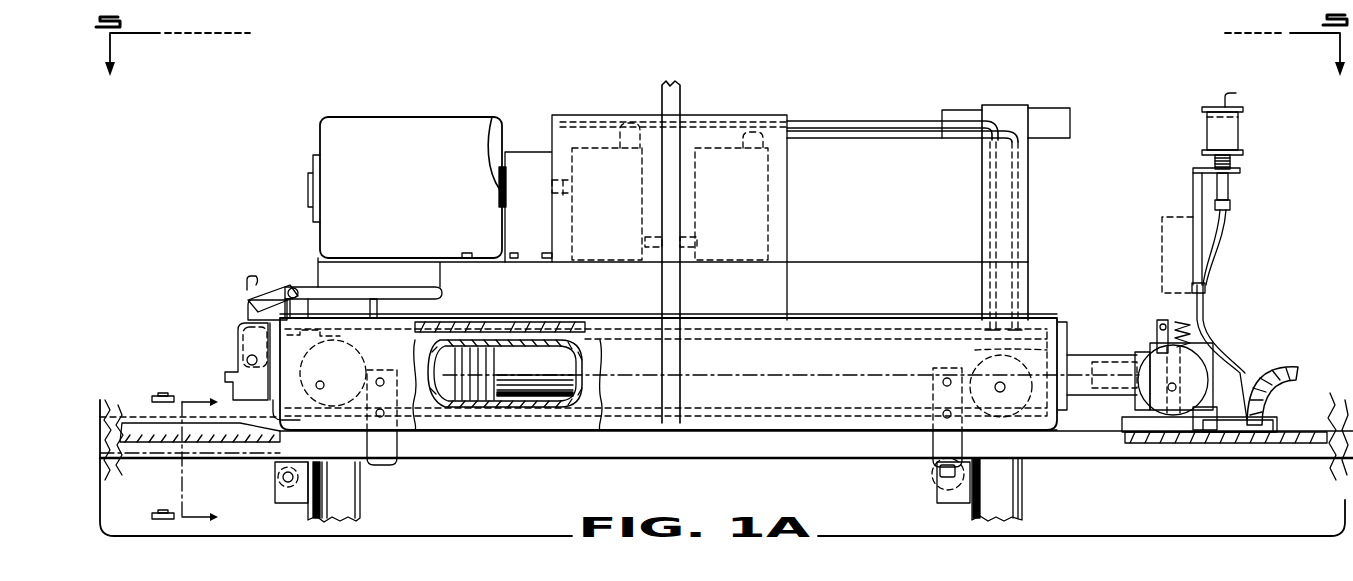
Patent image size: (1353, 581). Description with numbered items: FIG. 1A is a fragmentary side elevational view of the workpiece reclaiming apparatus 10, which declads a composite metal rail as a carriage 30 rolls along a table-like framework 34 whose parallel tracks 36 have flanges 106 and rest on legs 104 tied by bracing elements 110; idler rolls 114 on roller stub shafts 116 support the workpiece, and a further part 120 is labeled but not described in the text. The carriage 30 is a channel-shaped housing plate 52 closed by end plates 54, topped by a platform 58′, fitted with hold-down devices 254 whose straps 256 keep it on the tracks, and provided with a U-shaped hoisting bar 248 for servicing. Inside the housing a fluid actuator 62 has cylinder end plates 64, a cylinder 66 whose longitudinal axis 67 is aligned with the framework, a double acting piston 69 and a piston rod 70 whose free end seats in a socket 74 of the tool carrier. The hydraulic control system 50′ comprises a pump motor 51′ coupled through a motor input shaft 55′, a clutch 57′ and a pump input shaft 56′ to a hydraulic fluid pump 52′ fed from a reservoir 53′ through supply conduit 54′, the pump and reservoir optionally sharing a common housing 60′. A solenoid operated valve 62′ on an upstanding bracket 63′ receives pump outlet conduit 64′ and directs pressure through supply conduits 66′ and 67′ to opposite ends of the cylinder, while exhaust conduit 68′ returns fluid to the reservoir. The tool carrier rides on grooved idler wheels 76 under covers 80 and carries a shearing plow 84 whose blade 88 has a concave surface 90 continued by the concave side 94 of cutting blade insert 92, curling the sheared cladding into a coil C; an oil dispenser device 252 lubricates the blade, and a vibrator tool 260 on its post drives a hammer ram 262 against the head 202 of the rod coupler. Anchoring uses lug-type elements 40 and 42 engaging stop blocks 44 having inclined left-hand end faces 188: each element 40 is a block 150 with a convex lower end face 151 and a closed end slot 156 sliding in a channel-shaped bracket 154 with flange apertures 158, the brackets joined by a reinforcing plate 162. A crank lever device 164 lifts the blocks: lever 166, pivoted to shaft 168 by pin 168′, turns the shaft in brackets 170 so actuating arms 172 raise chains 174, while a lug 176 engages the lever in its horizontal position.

The workpiece reclaiming apparatus 10 is at (252, 92).
The hydraulic control system 50′ is at (386, 104).
The pump motor 51′ is at (432, 122).
The motor input shaft 55′ is at (491, 117).
The clutch 57′ is at (524, 162).
The pump input shaft 56′ is at (563, 180).
The hydraulic fluid pump 52′ is at (597, 157).
The reservoir 53′ is at (720, 157).
The common housing 60′ is at (738, 115).
The pump fluid outlet conduit 64′ is at (812, 121).
The exhaust conduit 68′ is at (853, 131).
The solenoid operated valve 62′ is at (1040, 115).
The portable oil reservoir dispenser device 252 is at (1196, 124).
The U-shaped hoisting bar 248 is at (662, 180).
The supply conduit 54′ is at (645, 240).
The upstanding bracket 63′ is at (980, 195).
The vibrator tool 260 is at (1155, 231).
The supply conduit 66′ is at (987, 247).
The supply conduit 67′ is at (1040, 245).
The reciprocal hammer ram 262 is at (1180, 298).
The shaft 168 is at (288, 288).
The crank lever device 164 is at (367, 279).
The actuating arms 172 is at (258, 280).
The pin 168′ is at (296, 287).
The brackets 170 is at (316, 300).
The lever 166 is at (382, 293).
The chains 174 is at (250, 303).
The lug 176 is at (378, 307).
The closed end slot 156 is at (240, 335).
The retractable anchoring lug-type element 40 is at (237, 340).
The reinforcing plate 162 is at (240, 362).
The flange apertures 158 is at (258, 360).
The channel-shaped brackets 154 is at (230, 392).
The lower bottom end face 151 is at (251, 392).
The block 150 is at (284, 414).
The left-hand end face 188 is at (140, 400).
The end plates 64 is at (667, 373).
The end plates 54 is at (1063, 322).
The cylinder 66 is at (540, 340).
The fluid actuator 62 is at (580, 402).
The double acting piston 69 is at (462, 367).
The piston rod 70 is at (528, 385).
The channel-shaped plate 52 is at (663, 372).
The longitudinal axis 67 is at (742, 375).
The platform 58′ is at (625, 294).
The carriage 30 is at (733, 431).
The flange 106 is at (660, 452).
The tracks 36 is at (820, 446).
The hold-down devices 254 is at (365, 442).
The strap 256 is at (392, 457).
The roller stub shafts 116 is at (945, 470).
The idler rolls 114 is at (275, 477).
The bracing element 110 is at (968, 500).
The supports 104 is at (358, 500).
The framework 34 is at (366, 491).
The fastener 120 is at (300, 510).
The stop blocks 44 is at (213, 430).
The socket 74 is at (1150, 355).
The grooved idler wheels 76 is at (1180, 427).
The lug-type elements 42 is at (1157, 325).
The enlarged head 202 is at (1190, 322).
The covers 80 is at (1222, 365).
The concave surface 90 is at (1240, 377).
The coil C is at (1292, 360).
The concave right-hand side 94 is at (1268, 417).
The shearing blade 88 is at (1232, 408).
The shearing plow 84 is at (1220, 417).
The cutting blade insert 92 is at (1248, 428).